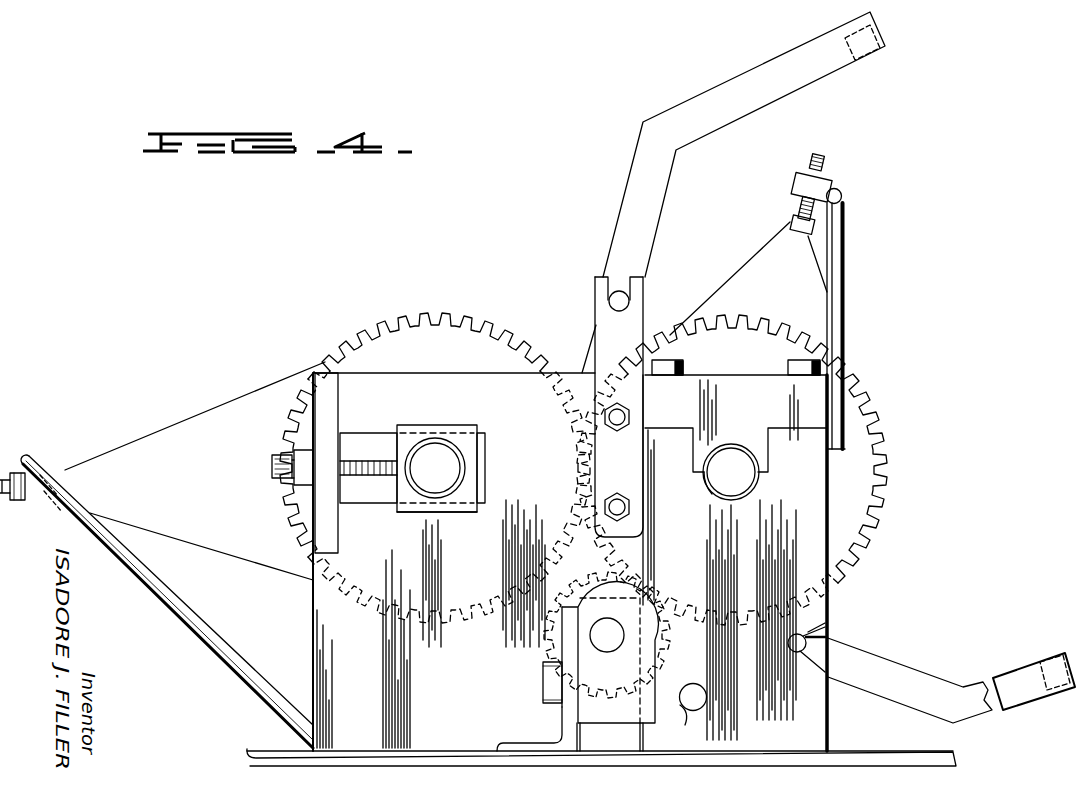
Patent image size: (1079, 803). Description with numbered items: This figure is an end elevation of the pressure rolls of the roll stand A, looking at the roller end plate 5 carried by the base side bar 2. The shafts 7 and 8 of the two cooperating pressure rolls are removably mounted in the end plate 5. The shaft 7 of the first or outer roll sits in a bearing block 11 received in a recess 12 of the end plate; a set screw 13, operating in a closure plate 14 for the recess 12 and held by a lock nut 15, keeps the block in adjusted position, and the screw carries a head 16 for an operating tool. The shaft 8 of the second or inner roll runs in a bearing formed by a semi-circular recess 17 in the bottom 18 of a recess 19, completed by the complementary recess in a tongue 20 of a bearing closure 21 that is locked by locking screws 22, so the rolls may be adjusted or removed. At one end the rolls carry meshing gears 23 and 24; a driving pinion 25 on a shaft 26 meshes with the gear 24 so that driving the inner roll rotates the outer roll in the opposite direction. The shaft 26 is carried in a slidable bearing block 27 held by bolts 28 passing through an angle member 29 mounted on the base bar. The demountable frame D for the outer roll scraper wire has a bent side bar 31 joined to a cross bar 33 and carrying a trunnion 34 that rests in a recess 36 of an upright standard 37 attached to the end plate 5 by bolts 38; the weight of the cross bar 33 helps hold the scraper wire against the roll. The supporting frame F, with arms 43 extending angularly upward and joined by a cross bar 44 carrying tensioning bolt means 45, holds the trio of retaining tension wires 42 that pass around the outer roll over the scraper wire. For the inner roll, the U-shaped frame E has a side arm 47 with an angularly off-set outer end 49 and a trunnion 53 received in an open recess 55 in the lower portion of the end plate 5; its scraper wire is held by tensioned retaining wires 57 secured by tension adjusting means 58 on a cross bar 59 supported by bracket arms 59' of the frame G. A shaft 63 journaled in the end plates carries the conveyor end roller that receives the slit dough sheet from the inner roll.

The side bar 2 is at (948, 758).
The roller end plate 5 is at (318, 625).
The shaft 7 is at (450, 463).
The shaft 8 is at (731, 482).
The bearing block 11 is at (470, 498).
The recess 12 is at (386, 440).
The set screw 13 is at (378, 480).
The closure plate 14 is at (322, 505).
The lock nut 15 is at (292, 483).
The head 16 is at (272, 463).
The semi-circular recess 17 is at (755, 493).
The bottom 18 is at (706, 480).
The recess 19 is at (694, 455).
The tongue 20 is at (770, 455).
The bearing closure 21 is at (820, 405).
The locking screws 22 is at (786, 360).
The gear 23 is at (402, 320).
The gear 24 is at (872, 432).
The driving pinion 25 is at (667, 648).
The shaft 26 is at (609, 643).
The bearing block 27 is at (645, 711).
The bolts 28 is at (543, 678).
The angle members 29 is at (578, 403).
The side bar 31 is at (640, 248).
The cross bar 33 is at (877, 22).
The trunnion 34 is at (628, 300).
The recess 36 is at (607, 289).
The upright standard 37 is at (597, 328).
The bolts 38 is at (617, 432).
The retaining tension wires 42 is at (172, 430).
The arms 43 is at (157, 587).
The cross bar 44 is at (35, 453).
The tensioning bolt means 45 is at (30, 505).
The side arm 47 is at (890, 668).
The angularly off-set end 49 is at (1018, 685).
The trunnion 53 is at (830, 688).
The open recess 55 is at (826, 626).
The tensioned retaining wires 57 is at (745, 262).
The tension adjusting means 58 is at (793, 190).
The cross bar 59 is at (848, 183).
The bracket arms 59' is at (856, 326).
The shaft 63 is at (695, 712).
The roll stand A is at (435, 455).
The frame D is at (744, 144).
The U-shaped frame E is at (899, 679).
The supporting frame F is at (167, 601).
The frame G is at (856, 326).